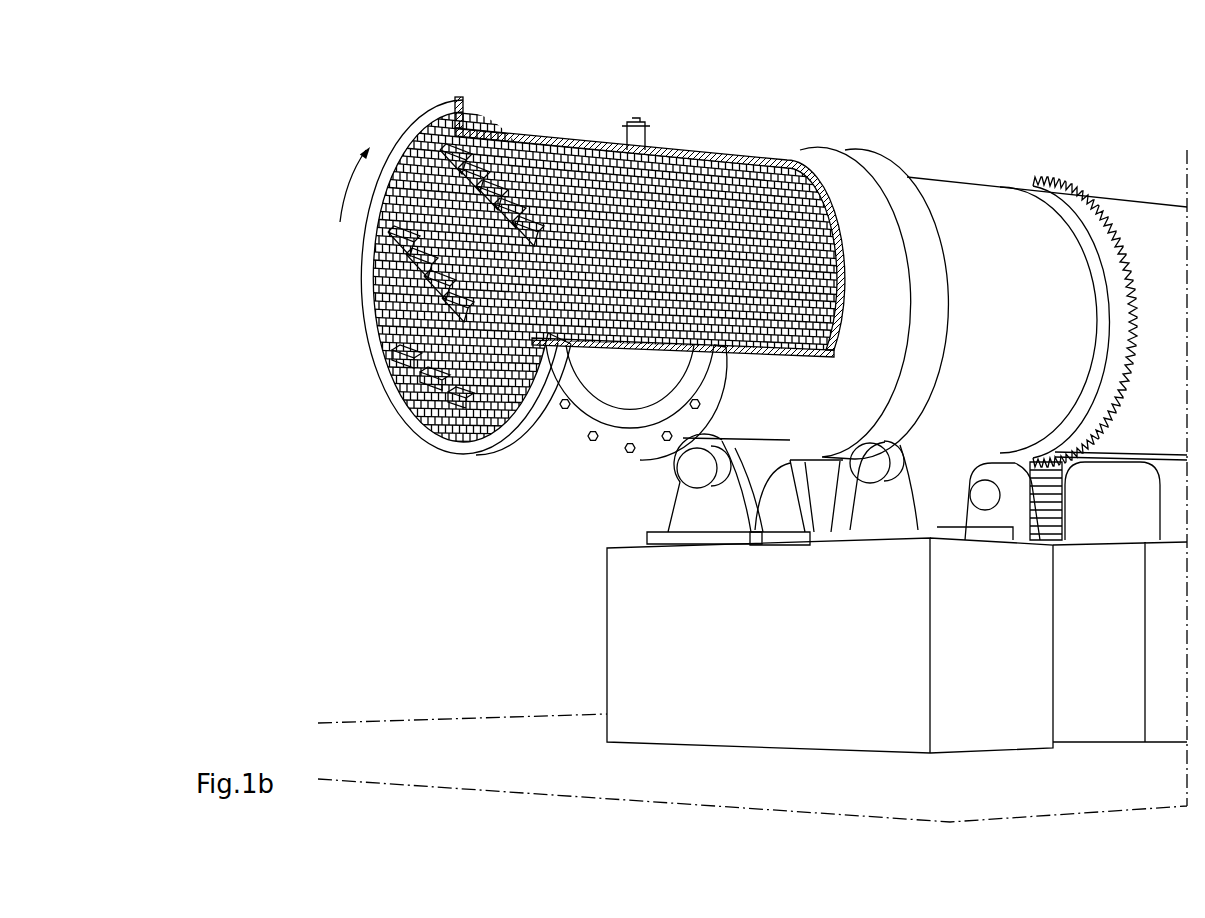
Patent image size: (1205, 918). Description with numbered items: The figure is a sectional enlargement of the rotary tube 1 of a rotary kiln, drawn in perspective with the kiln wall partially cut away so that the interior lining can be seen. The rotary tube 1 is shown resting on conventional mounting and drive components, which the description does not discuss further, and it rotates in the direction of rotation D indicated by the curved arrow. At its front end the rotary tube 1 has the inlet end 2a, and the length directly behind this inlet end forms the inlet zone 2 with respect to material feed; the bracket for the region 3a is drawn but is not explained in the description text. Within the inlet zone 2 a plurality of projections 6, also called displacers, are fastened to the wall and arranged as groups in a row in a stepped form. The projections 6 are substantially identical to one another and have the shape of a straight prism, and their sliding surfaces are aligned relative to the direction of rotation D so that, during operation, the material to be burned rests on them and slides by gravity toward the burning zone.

The rotary tube 1 is at (278, 104).
The inlet zone 2 is at (561, 88).
The inlet end 2a is at (382, 402).
The drum body 3a is at (563, 97).
The projections 6 is at (447, 150).
The direction of rotation D is at (346, 190).